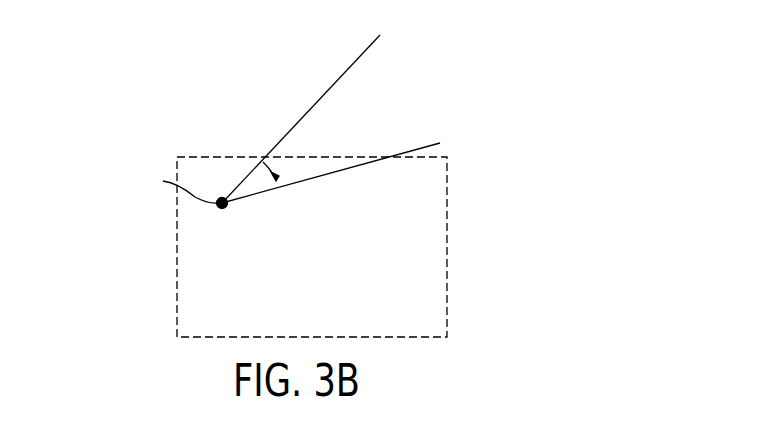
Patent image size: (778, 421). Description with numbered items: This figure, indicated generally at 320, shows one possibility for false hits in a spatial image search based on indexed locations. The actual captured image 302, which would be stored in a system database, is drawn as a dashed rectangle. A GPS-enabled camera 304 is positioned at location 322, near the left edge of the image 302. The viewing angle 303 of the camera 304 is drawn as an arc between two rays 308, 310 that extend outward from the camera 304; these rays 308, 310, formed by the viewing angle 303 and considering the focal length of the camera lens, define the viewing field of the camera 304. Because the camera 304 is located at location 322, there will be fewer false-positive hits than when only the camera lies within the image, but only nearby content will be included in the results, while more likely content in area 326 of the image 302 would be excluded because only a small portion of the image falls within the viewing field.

The actual captured image 302 is at (177, 242).
The viewing angle 303 is at (272, 183).
The GPS-enabled camera 304 is at (224, 208).
The ray 308 is at (363, 165).
The ray 310 is at (348, 70).
The false hit possibility for spatial image search 320 is at (108, 211).
The location 322 is at (175, 186).
The area 326 is at (328, 279).